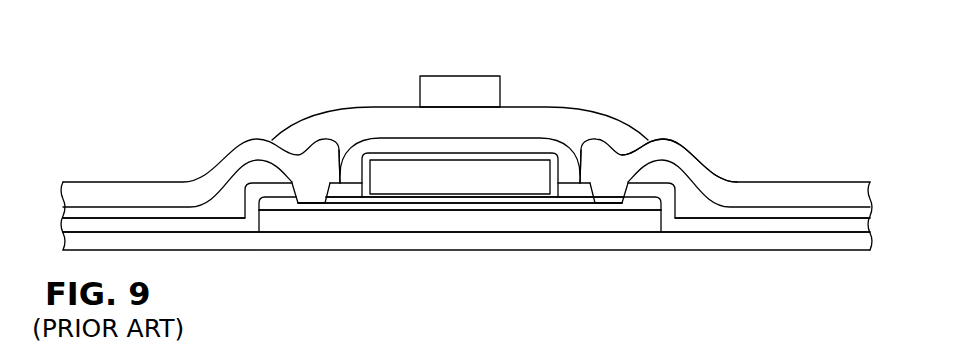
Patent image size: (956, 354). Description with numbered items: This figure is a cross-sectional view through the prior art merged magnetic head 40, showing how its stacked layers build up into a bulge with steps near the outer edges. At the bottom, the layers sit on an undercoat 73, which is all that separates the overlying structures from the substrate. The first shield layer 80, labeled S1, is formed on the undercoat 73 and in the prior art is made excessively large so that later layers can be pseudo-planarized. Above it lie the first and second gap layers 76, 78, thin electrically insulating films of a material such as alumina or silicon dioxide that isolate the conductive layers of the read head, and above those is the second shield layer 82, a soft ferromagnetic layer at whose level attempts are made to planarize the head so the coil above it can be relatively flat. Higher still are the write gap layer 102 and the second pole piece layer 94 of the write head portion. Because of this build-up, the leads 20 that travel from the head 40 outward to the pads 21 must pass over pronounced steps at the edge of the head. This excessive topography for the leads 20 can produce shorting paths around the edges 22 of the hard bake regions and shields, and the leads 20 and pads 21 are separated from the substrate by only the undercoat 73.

The merged magnetic head 40 is at (230, 63).
The leads 20 is at (99, 188).
The pads 21 is at (613, 153).
The edges of the hard bake regions and shields 22 is at (676, 162).
The second pole piece layer 94 is at (472, 75).
The second shield layer 82 is at (500, 173).
The write gap layer 102 is at (223, 227).
The undercoat 73 is at (337, 242).
The first shield layer S1 is at (460, 257).
The first shield layer 80 is at (412, 223).
The first gap layer 76 is at (638, 205).
The second gap layer 78 is at (487, 254).